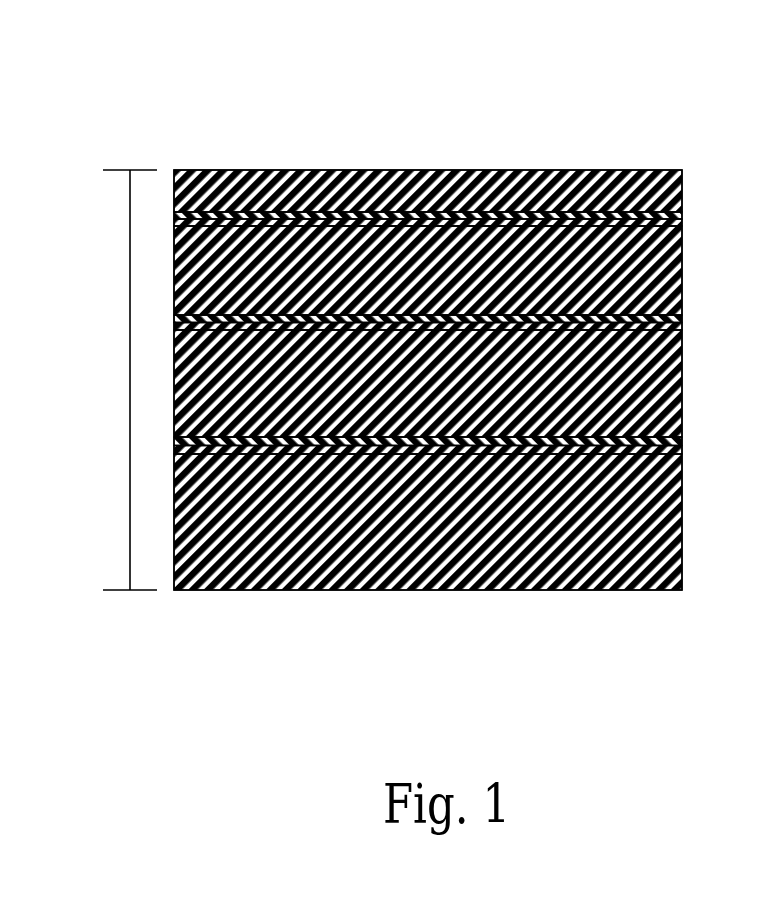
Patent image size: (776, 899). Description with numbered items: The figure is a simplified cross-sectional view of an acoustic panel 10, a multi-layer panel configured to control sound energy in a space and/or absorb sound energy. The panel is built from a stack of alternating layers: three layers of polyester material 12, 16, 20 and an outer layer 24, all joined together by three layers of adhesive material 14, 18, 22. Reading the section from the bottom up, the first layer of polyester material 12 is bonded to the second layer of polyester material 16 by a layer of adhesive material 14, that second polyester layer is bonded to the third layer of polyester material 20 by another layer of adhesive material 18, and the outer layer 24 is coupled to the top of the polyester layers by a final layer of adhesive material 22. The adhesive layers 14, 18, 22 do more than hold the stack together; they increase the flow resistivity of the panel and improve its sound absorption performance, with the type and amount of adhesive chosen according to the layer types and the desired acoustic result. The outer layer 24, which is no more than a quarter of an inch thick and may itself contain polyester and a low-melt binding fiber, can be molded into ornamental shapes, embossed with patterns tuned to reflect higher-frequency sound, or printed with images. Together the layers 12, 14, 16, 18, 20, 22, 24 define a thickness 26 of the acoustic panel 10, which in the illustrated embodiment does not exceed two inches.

The acoustic panel 10 is at (250, 101).
The layer of polyester material 12 is at (682, 514).
The layer of adhesive material 14 is at (682, 440).
The layer of polyester material 16 is at (682, 377).
The layer of adhesive material 18 is at (682, 320).
The layer of polyester material 20 is at (682, 259).
The layer of adhesive material 22 is at (682, 214).
The outer layer 24 is at (638, 170).
The thickness 26 is at (130, 380).